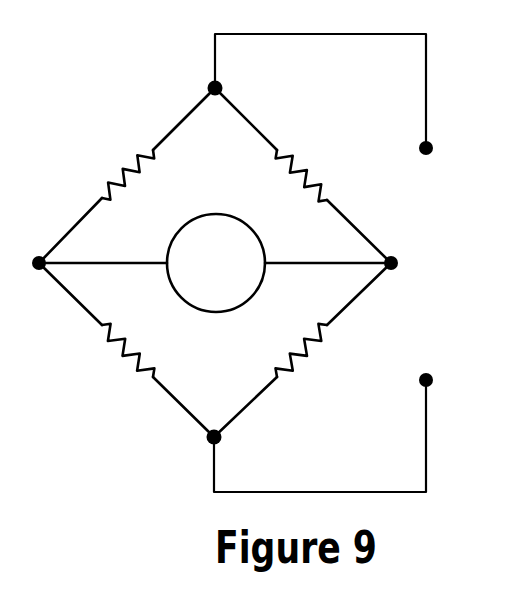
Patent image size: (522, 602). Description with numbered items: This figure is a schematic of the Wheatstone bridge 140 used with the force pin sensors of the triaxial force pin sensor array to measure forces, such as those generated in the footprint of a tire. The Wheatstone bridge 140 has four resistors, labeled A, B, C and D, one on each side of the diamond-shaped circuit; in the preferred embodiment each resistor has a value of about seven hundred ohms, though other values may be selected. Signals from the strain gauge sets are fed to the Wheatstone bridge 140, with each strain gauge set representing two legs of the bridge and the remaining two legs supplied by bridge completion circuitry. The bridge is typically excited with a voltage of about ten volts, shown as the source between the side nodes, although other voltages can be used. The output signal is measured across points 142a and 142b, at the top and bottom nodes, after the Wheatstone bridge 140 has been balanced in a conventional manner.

The Wheatstone bridge 140 is at (232, 297).
The output measurement point 142a is at (221, 84).
The output measurement point 142b is at (192, 447).